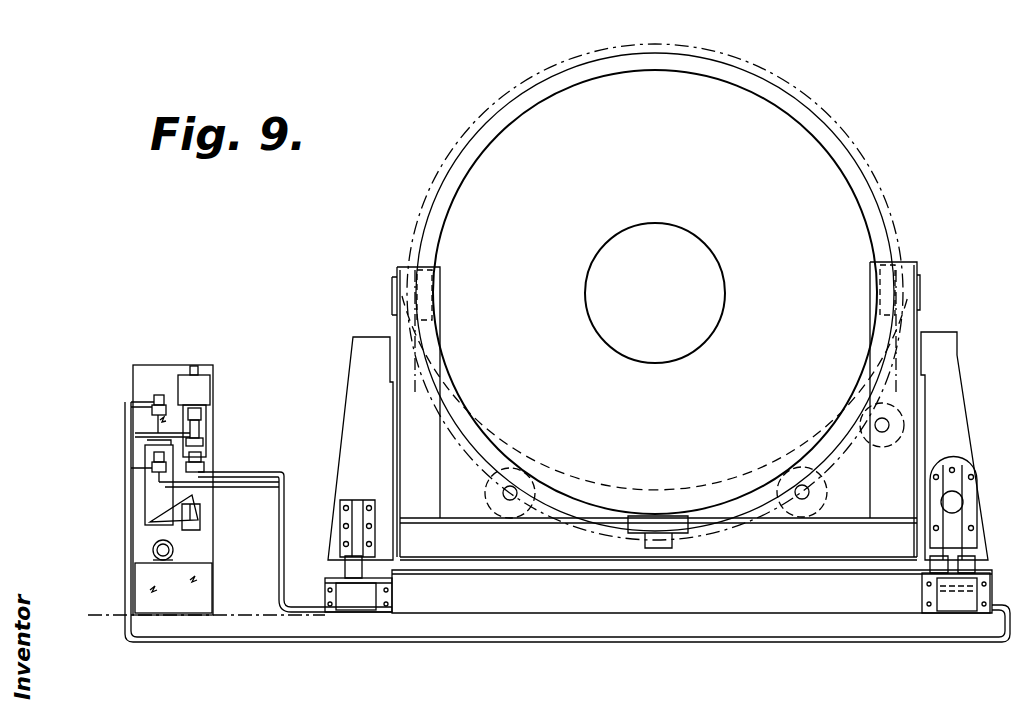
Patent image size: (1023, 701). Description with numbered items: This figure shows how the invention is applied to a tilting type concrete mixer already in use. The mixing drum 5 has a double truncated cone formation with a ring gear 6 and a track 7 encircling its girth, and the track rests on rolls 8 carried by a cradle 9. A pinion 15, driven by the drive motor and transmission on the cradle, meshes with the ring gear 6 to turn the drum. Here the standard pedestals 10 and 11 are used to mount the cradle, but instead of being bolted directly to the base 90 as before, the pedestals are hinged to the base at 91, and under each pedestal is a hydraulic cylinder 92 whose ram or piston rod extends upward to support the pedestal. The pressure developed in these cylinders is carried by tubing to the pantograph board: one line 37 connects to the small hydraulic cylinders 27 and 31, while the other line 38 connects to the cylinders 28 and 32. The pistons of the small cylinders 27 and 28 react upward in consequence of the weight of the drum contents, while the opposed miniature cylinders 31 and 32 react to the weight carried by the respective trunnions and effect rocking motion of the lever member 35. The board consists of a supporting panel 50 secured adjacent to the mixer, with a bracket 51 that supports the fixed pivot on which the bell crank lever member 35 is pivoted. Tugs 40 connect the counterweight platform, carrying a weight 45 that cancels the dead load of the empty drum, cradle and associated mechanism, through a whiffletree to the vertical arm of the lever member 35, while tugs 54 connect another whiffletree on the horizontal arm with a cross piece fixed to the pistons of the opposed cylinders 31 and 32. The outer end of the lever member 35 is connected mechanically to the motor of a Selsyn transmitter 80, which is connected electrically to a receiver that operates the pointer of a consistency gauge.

The mixing drum 5 is at (610, 152).
The ring gear 6 is at (850, 136).
The track 7 is at (876, 184).
The rolls 8 is at (484, 492).
The cradle 9 is at (428, 450).
The standard pedestal 10 is at (364, 335).
The standard pedestal 11 is at (938, 332).
The pinion 15 is at (884, 448).
The hydraulic cylinder 27 is at (203, 457).
The hydraulic cylinder 28 is at (200, 421).
The miniature cylinder 31 is at (152, 466).
The miniature cylinder 32 is at (150, 410).
The lever member 35 is at (196, 510).
The line 37 is at (280, 546).
The line 38 is at (242, 648).
The tugs 40 is at (208, 436).
The weight 45 is at (196, 388).
The supporting panel 50 is at (168, 367).
The bracket 51 is at (201, 530).
The tugs 54 is at (145, 498).
The Selsyn transmitter 80 is at (152, 552).
The base 90 is at (686, 597).
The hinge 91 is at (384, 566).
The hydraulic cylinder 92 is at (350, 614).